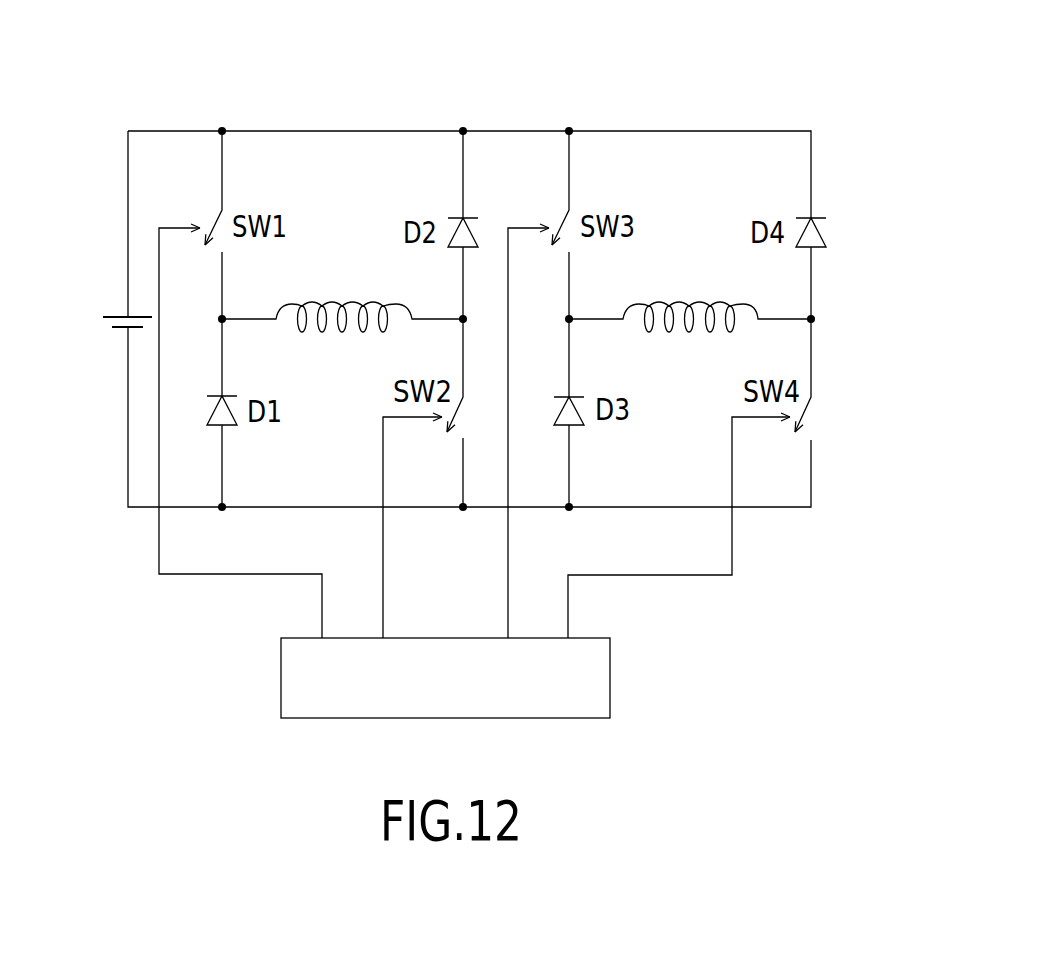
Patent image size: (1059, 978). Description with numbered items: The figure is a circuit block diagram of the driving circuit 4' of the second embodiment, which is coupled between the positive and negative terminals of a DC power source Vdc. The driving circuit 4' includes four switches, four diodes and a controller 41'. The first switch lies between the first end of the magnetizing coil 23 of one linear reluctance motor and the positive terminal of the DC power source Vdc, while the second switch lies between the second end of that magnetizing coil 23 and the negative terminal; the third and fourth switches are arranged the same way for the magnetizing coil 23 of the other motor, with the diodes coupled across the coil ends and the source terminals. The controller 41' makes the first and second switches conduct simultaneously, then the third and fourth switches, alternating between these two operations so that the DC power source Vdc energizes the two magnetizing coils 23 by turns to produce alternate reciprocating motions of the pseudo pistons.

The driving circuit 4' is at (786, 42).
The magnetizing coil 23 is at (353, 303).
The controller 41' is at (474, 471).
The DC power source Vdc is at (89, 370).